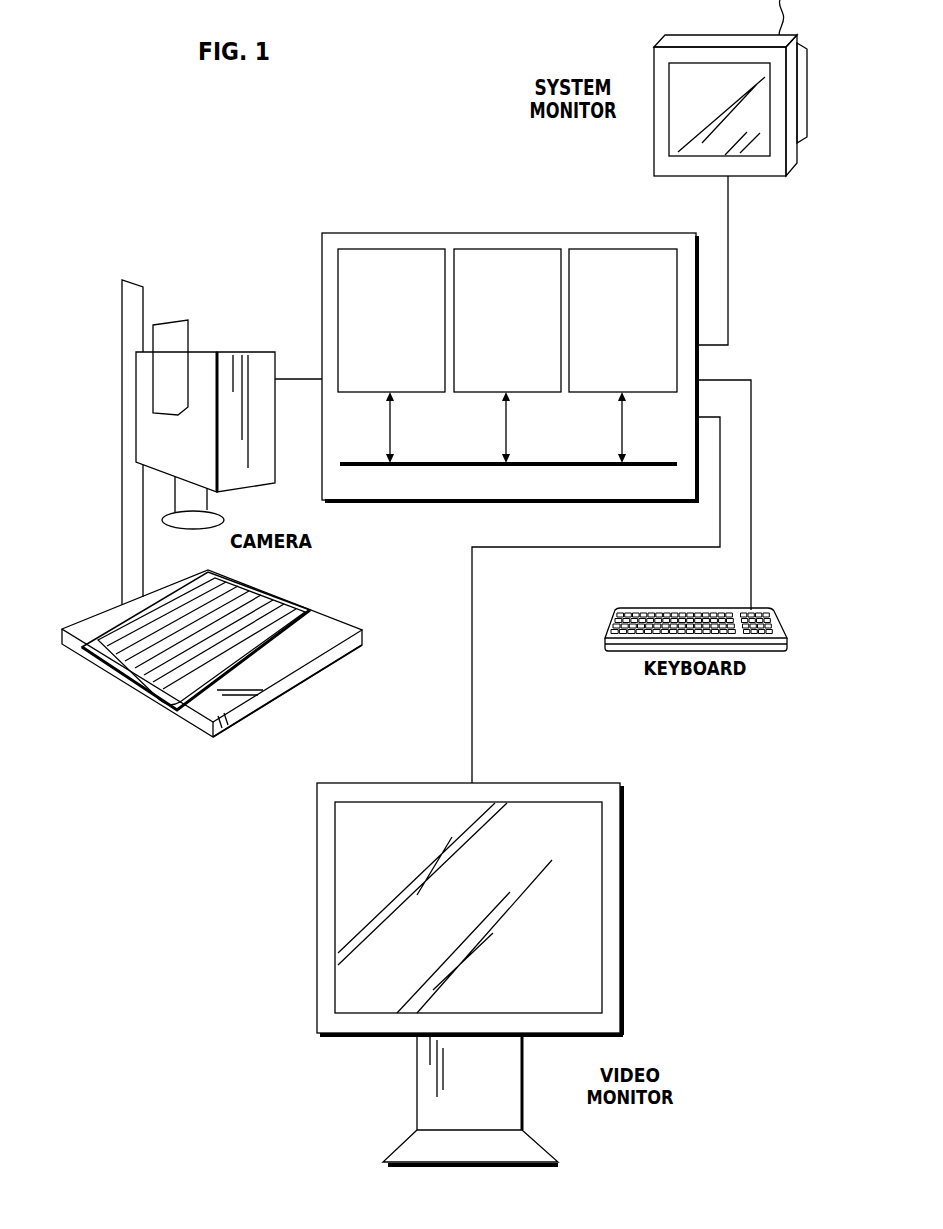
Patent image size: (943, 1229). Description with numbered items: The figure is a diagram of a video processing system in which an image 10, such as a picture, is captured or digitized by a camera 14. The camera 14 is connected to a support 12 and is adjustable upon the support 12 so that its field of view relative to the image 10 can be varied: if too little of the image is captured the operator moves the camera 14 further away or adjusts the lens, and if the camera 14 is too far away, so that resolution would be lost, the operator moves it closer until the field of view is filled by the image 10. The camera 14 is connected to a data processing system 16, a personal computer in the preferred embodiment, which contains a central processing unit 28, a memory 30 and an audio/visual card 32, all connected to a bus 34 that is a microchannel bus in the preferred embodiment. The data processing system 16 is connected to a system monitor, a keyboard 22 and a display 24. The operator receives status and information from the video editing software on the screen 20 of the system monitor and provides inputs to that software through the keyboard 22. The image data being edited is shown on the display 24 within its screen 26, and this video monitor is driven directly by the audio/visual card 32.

The image 10 is at (258, 593).
The support 12 is at (122, 533).
The camera 14 is at (219, 352).
The data processing system 16 is at (512, 232).
The screen 20 is at (709, 103).
The keyboard 22 is at (662, 610).
The display 24 is at (627, 973).
The screen 26 is at (452, 896).
The central processing unit 28 is at (381, 358).
The memory 30 is at (497, 358).
The audio/visual card 32 is at (613, 358).
The bus 34 is at (482, 466).